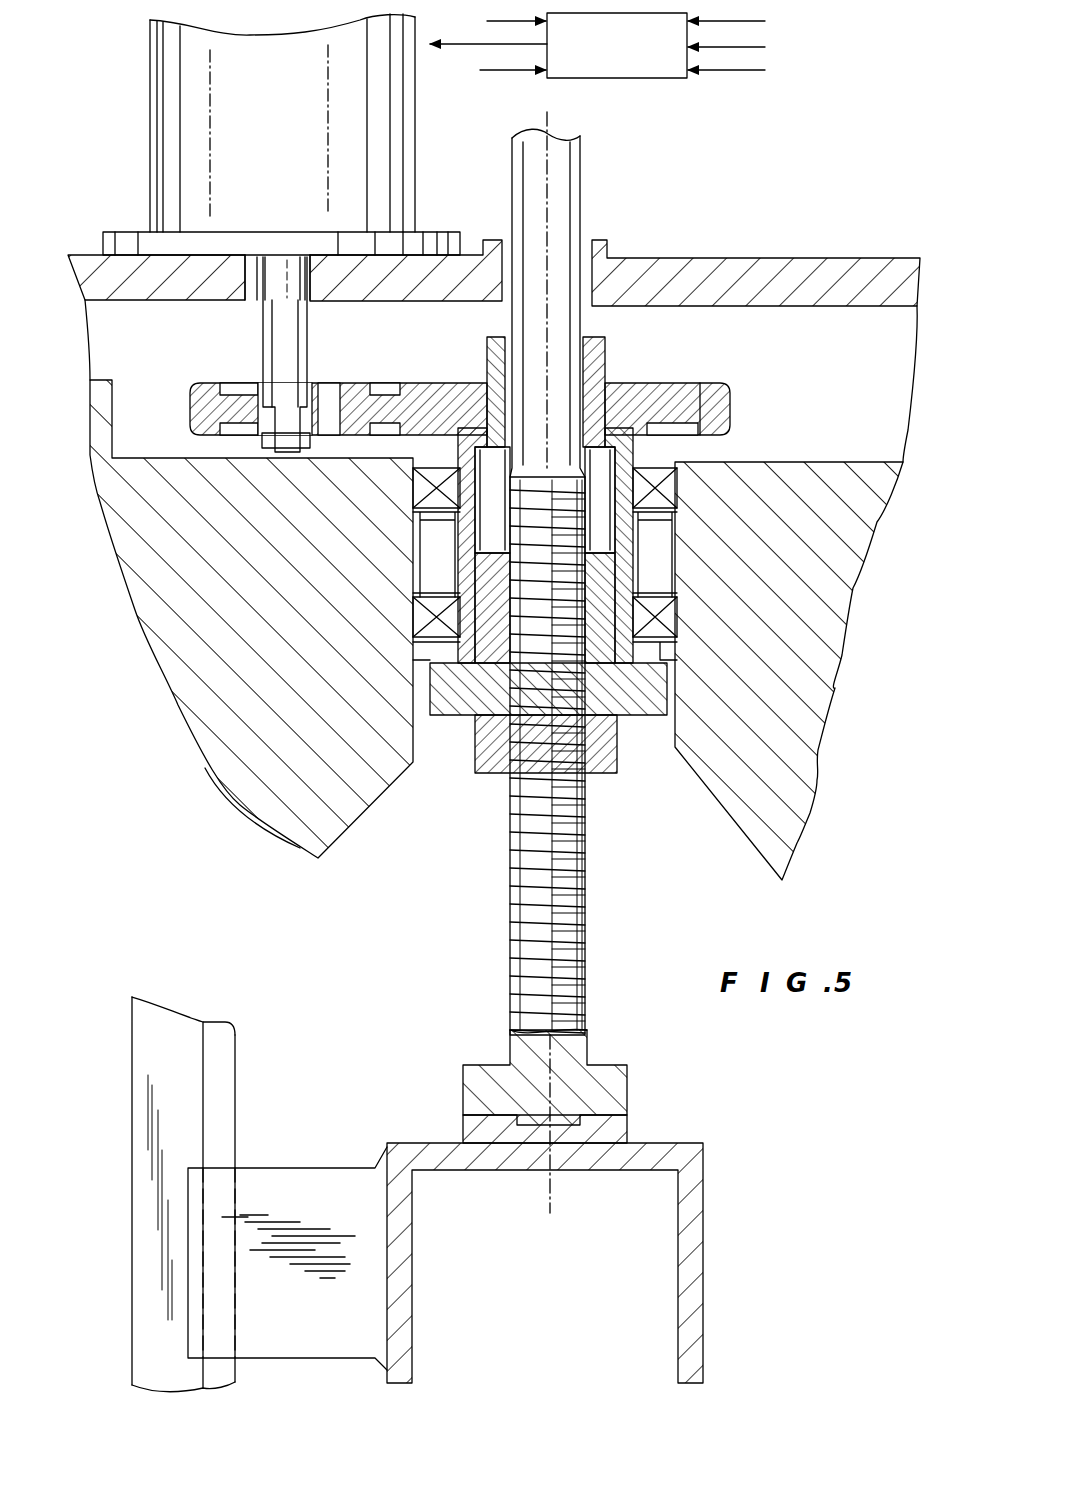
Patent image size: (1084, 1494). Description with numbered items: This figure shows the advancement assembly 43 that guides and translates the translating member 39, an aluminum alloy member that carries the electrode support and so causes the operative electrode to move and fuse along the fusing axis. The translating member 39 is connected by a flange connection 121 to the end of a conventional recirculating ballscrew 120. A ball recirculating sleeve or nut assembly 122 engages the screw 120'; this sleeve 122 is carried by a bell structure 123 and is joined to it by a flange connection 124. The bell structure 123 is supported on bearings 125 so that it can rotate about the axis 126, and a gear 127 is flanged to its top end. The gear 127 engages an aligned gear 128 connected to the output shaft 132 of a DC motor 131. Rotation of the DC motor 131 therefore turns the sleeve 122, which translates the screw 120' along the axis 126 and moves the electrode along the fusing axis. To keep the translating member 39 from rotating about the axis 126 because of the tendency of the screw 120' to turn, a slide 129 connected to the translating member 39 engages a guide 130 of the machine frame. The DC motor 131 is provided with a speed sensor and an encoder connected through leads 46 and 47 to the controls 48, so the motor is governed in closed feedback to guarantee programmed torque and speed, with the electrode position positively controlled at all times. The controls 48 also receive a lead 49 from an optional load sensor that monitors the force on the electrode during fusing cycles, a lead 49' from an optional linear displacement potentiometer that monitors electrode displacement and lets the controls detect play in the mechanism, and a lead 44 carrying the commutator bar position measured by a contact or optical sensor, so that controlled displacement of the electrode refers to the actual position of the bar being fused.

The translating member 39 is at (695, 1228).
The advancement assembly 43 is at (860, 864).
The lead 44 is at (765, 21).
The lead 46 is at (487, 21).
The lead 47 is at (480, 70).
The controls 48 is at (645, 79).
The lead 49 is at (752, 53).
The lead 49' is at (751, 92).
The recirculating ballscrew 120 is at (596, 756).
The screw 120' is at (592, 914).
The flange connection 121 is at (643, 1110).
The ball recirculating sleeve 122 is at (490, 766).
The bell structure 123 is at (636, 570).
The flange connection 124 is at (700, 700).
The bearings 125 is at (413, 612).
The axis 126 is at (547, 130).
The gear 127 is at (665, 395).
The gear 128 is at (240, 400).
The slide 129 is at (302, 1170).
The guide 130 is at (222, 1076).
The DC motor 131 is at (172, 120).
The output shaft 132 is at (300, 357).